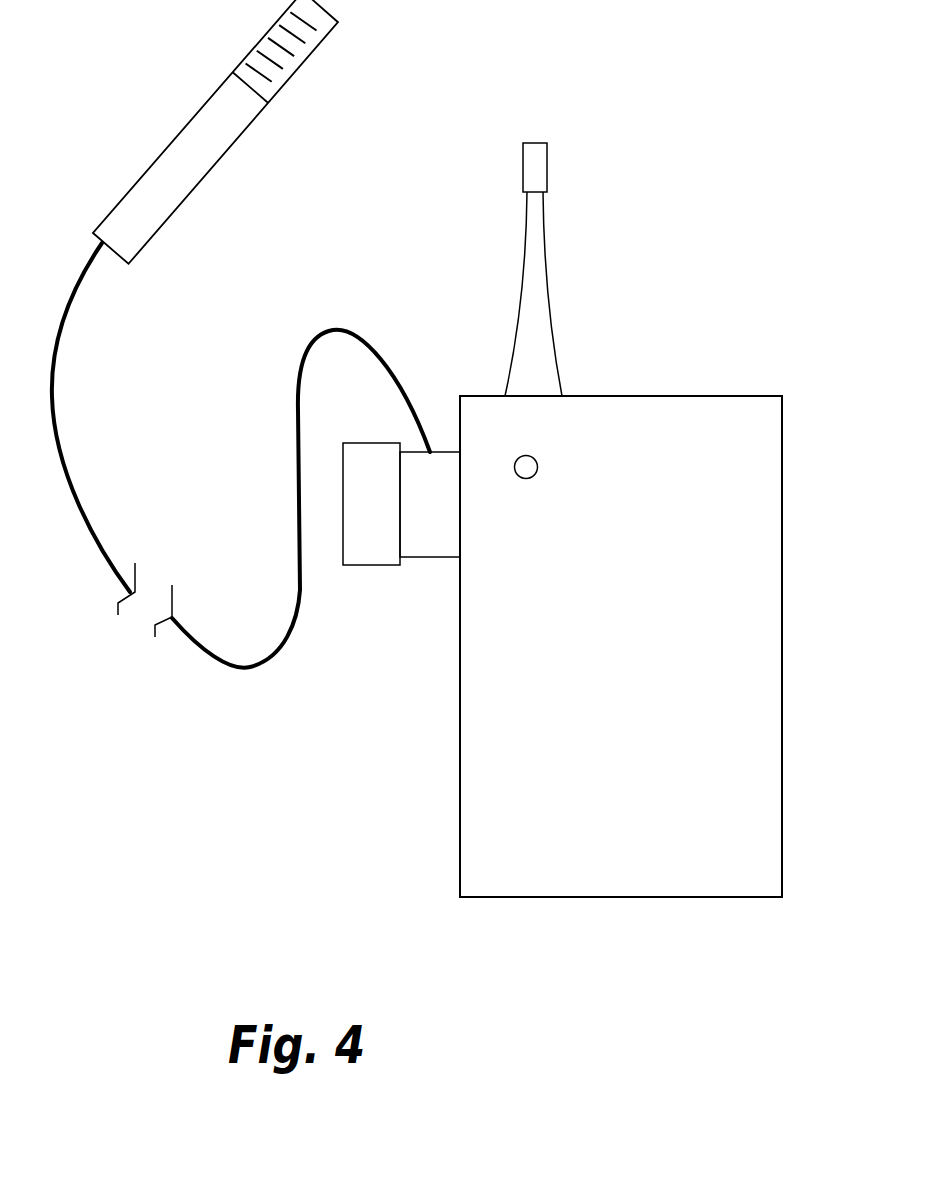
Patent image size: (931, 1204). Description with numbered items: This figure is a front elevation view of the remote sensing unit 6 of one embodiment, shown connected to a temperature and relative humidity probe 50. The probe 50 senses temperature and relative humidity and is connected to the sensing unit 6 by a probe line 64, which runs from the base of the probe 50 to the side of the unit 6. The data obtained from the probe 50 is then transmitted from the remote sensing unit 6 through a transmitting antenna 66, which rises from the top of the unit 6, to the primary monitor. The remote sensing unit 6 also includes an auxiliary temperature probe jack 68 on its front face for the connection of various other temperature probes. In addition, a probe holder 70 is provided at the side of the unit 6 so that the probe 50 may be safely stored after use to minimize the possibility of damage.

The remote sensing unit 6 is at (662, 265).
The probe 50 is at (223, 80).
The probe line 64 is at (327, 327).
The transmitting antenna 66 is at (553, 343).
The auxiliary temperature probe jack 68 is at (535, 462).
The probe holder 70 is at (373, 565).